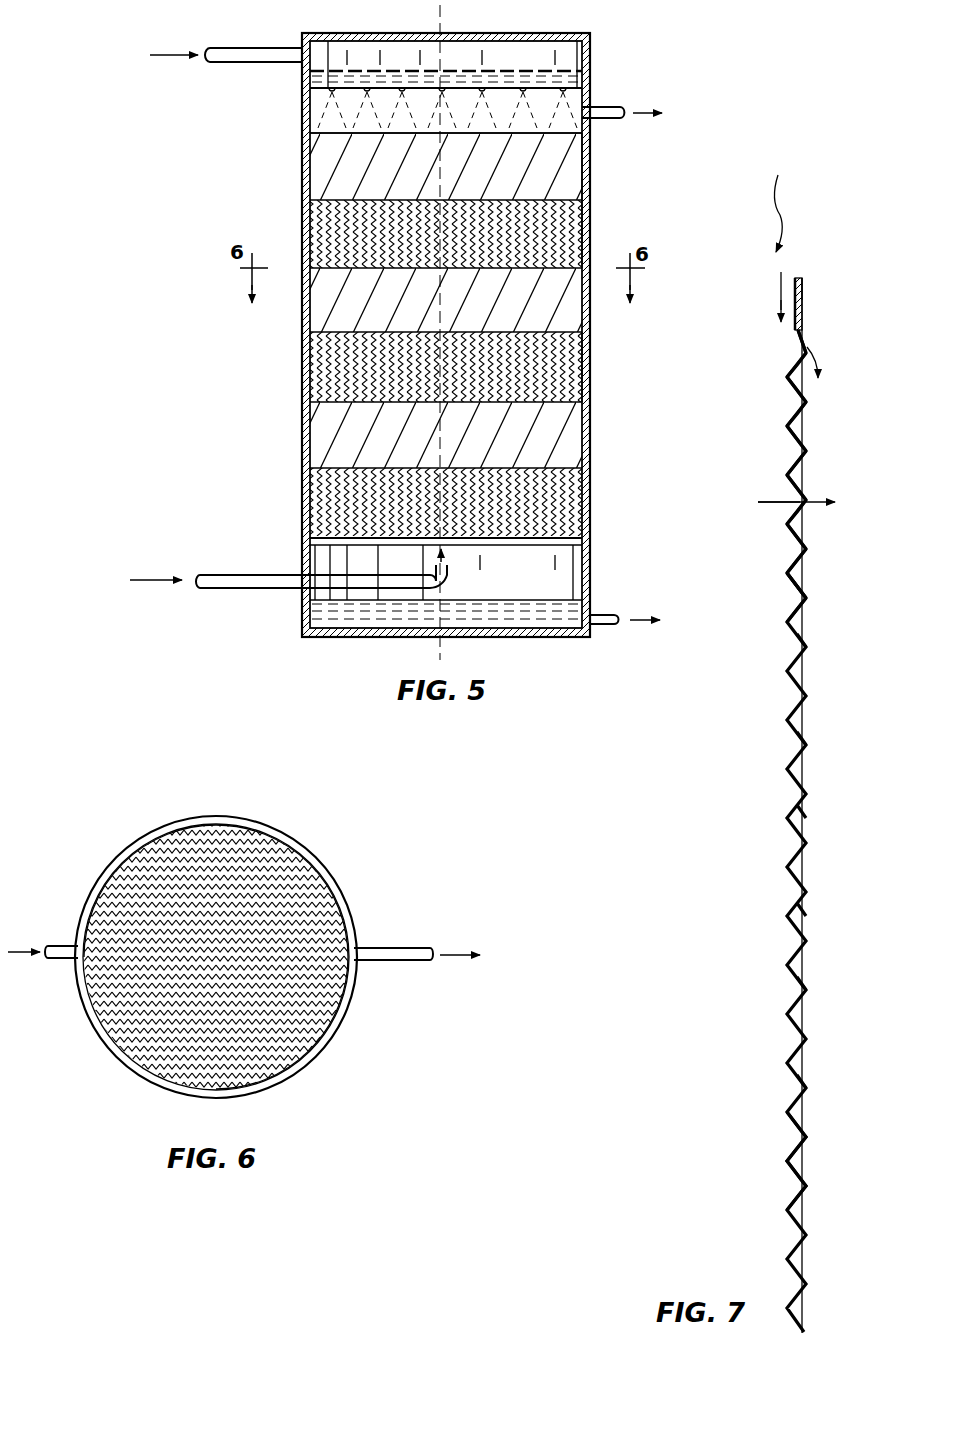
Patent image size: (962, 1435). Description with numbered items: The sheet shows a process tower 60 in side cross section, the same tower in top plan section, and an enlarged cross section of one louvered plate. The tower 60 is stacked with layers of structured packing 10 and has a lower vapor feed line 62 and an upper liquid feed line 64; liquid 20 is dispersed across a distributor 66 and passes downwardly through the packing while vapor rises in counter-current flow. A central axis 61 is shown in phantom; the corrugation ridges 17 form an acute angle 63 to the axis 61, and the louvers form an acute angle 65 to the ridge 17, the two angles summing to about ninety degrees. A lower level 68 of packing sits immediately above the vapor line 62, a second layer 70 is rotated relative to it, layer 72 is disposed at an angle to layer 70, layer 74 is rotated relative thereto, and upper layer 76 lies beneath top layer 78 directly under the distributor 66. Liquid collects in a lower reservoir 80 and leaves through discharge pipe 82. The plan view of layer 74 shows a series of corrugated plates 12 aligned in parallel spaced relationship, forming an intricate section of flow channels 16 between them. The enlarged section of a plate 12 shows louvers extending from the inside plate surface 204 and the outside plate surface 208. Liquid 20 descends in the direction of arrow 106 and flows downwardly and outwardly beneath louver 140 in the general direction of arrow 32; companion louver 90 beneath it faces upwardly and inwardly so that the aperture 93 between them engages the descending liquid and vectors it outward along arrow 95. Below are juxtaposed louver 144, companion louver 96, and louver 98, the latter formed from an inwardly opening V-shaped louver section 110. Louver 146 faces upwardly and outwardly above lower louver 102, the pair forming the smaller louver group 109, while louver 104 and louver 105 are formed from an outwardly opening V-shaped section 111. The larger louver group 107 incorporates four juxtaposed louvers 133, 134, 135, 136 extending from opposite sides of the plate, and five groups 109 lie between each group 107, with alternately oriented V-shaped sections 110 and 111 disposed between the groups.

In FIG. 5, the structured packing 10 is at (573, 226).
In FIG. 6, the structured packing 10 is at (338, 927).
In FIG. 6, the corrugated plate 12 is at (333, 881).
In FIG. 7, the corrugated plate 12 is at (750, 835).
In FIG. 6, the flow channels 16 is at (330, 1001).
In FIG. 5, the corrugation ridge 17 is at (433, 182).
In FIG. 5, the liquid 20 is at (500, 110).
In FIG. 7, the liquid 20 is at (788, 213).
In FIG. 7, the arrow indicating general flow direction 32 is at (767, 505).
In FIG. 5, the process tower 60 is at (590, 420).
In FIG. 6, the process tower 60 is at (254, 824).
In FIG. 5, the central axis 61 is at (440, 12).
In FIG. 5, the lower vapor feed line 62 is at (266, 587).
In FIG. 5, the angle 63 is at (446, 157).
In FIG. 5, the upper liquid feed line 64 is at (270, 58).
In FIG. 5, the angle 65 is at (565, 175).
In FIG. 5, the distributor 66 is at (580, 90).
In FIG. 5, the lower level of structured packing 68 is at (330, 508).
In FIG. 5, the second layer of packing 70 is at (323, 443).
In FIG. 5, the layer of packing 72 is at (327, 370).
In FIG. 5, the layer of packing 74 is at (320, 307).
In FIG. 6, the layer of packing 74 is at (300, 858).
In FIG. 5, the upper layer of packing 76 is at (333, 230).
In FIG. 5, the top layer of packing 78 is at (313, 157).
In FIG. 5, the lower reservoir 80 is at (551, 615).
In FIG. 5, the discharge pipe 82 is at (608, 628).
In FIG. 7, the companion louver 90 is at (790, 360).
In FIG. 7, the aperture 93 is at (792, 342).
In FIG. 7, the arrow indicating liquid flow direction 95 is at (826, 354).
In FIG. 7, the companion louver 96 is at (793, 398).
In FIG. 7, the louver 98 is at (790, 420).
In FIG. 7, the lower louver 102 is at (795, 462).
In FIG. 7, the louver 104 is at (808, 500).
In FIG. 7, the louver 105 is at (806, 522).
In FIG. 7, the arrow indicating liquid flow 106 is at (786, 290).
In FIG. 7, the louver group 107 is at (836, 553).
In FIG. 7, the louver group 109 is at (836, 428).
In FIG. 7, the V-shaped louver section 110 is at (792, 407).
In FIG. 7, the V-shaped louver section 111 is at (808, 508).
In FIG. 7, the louver 133 is at (792, 536).
In FIG. 7, the louver 134 is at (790, 562).
In FIG. 7, the louver 135 is at (792, 585).
In FIG. 7, the louver 136 is at (792, 610).
In FIG. 7, the louver 140 is at (803, 335).
In FIG. 7, the juxtaposed louver 144 is at (810, 388).
In FIG. 7, the louver 146 is at (805, 440).
In FIG. 7, the inside plate surface 204 is at (783, 300).
In FIG. 7, the outside plate surface 208 is at (792, 297).